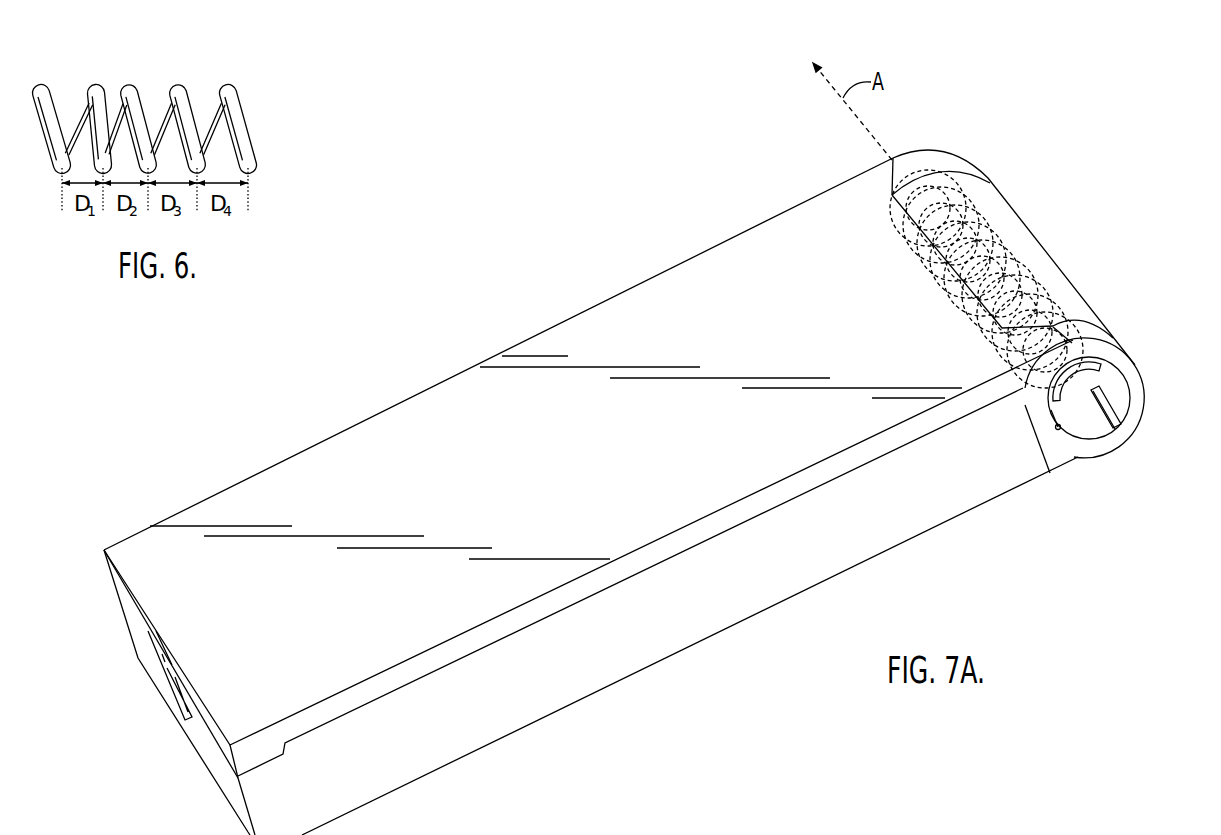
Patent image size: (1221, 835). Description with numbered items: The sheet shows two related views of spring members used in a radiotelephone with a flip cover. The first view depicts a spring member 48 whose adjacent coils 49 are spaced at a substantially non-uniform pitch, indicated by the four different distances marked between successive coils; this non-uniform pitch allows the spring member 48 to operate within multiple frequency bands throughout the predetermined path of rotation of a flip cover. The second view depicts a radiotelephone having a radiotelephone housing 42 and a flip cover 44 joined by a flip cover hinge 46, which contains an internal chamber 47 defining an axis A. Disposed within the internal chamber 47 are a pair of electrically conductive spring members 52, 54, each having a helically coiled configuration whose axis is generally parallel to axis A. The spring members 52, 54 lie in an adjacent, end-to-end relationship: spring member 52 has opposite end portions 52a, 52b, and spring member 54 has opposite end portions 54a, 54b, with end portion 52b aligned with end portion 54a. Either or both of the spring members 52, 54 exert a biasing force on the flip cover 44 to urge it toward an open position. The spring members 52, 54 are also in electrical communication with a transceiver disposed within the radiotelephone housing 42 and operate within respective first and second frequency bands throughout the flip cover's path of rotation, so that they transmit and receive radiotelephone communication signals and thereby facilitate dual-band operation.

In FIG. 7A, the radiotelephone housing 42 is at (972, 500).
In FIG. 7A, the flip cover 44 is at (451, 419).
In FIG. 7A, the flip cover hinge 46 is at (1110, 333).
In FIG. 7A, the internal chamber 47 is at (1112, 392).
In FIG. 6, the spring member 48 is at (164, 101).
In FIG. 6, the coils 49 is at (228, 87).
In FIG. 7A, the spring member 52 is at (978, 215).
In FIG. 7A, the end portion 52a is at (943, 173).
In FIG. 7A, the end portion 52b is at (997, 226).
In FIG. 7A, the spring member 54 is at (1072, 327).
In FIG. 7A, the end portion 54a is at (1023, 256).
In FIG. 7A, the end portion 54b is at (1100, 372).